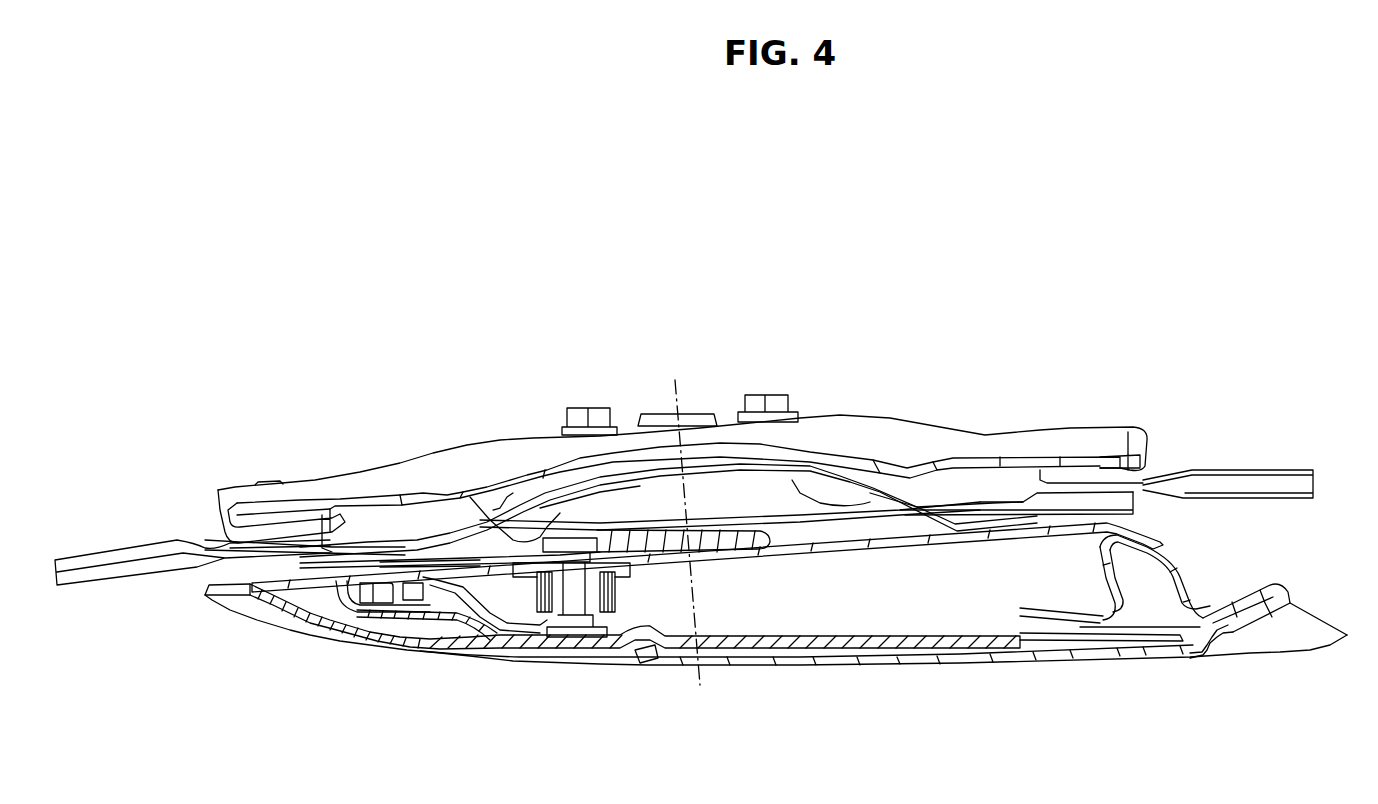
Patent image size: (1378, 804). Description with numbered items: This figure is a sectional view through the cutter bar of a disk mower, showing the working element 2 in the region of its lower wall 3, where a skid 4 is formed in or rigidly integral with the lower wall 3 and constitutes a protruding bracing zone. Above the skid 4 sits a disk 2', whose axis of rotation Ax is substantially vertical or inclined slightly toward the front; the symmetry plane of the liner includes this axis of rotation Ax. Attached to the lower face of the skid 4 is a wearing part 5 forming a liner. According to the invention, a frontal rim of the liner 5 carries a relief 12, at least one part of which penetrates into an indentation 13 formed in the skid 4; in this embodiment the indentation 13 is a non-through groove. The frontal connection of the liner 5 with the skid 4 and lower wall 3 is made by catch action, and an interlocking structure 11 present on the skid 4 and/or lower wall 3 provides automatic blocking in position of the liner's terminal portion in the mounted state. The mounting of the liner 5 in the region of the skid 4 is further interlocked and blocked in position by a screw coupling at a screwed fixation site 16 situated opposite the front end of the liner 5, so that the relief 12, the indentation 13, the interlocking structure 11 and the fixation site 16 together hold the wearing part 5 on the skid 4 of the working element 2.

The working element 2 is at (684, 406).
The disk 2' is at (682, 405).
The axis of rotation Ax is at (679, 388).
The lower wall 3 is at (835, 626).
The skid 4 is at (797, 647).
The wearing part 5 is at (995, 657).
The interlocking structure 11 is at (335, 581).
The relief 12 is at (645, 659).
The indentation 13 is at (660, 630).
The screwed fixation site 16 is at (1267, 650).